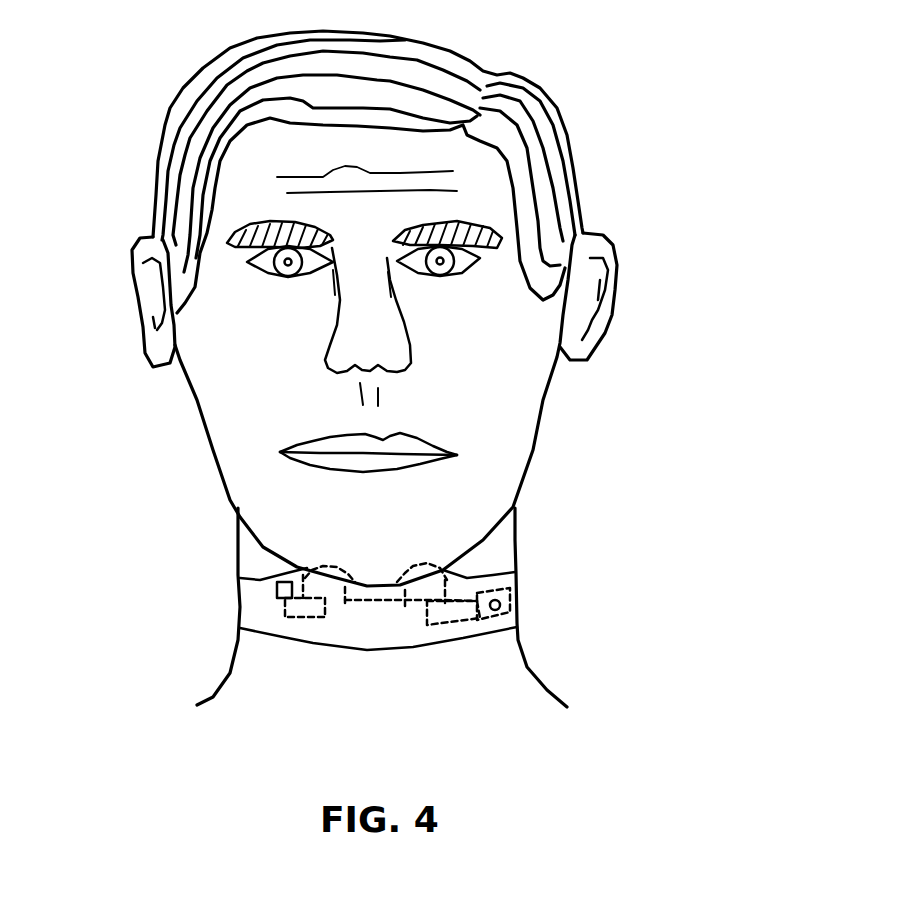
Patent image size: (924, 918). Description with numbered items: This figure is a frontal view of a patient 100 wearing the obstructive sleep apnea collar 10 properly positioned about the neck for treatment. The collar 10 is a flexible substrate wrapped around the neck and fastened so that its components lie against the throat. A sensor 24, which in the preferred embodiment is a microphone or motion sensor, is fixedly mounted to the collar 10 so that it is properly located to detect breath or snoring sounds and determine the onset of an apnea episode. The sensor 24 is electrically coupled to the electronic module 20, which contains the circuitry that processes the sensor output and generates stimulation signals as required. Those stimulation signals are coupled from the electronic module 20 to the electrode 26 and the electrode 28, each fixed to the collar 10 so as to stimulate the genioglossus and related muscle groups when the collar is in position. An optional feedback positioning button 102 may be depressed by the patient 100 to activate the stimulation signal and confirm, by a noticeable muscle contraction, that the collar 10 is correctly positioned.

The patient 100 is at (770, 162).
The obstructive sleep apnea collar 10 is at (243, 590).
The electronic module 20 is at (517, 573).
The sensor 24 is at (282, 595).
The electrode 28 is at (342, 592).
The electrode 26 is at (413, 601).
The feedback positioning button 102 is at (500, 606).